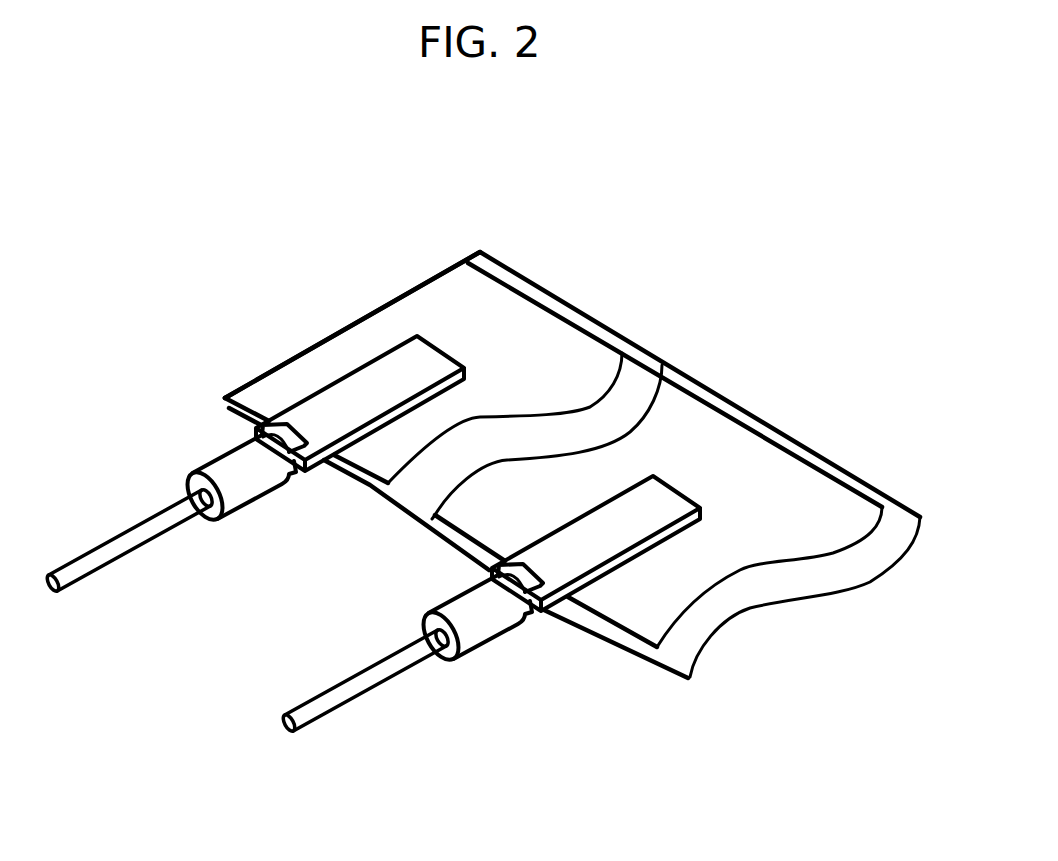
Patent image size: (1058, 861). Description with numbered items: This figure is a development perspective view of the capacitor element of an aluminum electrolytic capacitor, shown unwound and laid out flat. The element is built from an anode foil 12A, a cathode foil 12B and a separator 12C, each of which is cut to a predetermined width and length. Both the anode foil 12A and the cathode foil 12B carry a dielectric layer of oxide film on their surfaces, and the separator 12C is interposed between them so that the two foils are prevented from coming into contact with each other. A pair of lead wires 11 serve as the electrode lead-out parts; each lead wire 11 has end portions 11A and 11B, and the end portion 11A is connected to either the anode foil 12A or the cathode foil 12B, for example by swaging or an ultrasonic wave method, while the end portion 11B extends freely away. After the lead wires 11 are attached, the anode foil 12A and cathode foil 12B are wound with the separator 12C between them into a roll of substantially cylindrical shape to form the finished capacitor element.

The lead wire 11 is at (500, 655).
The end portion 11A is at (590, 547).
The end portion 11B is at (383, 672).
The anode foil 12A is at (752, 462).
The cathode foil 12B is at (552, 357).
The separator 12C is at (638, 380).